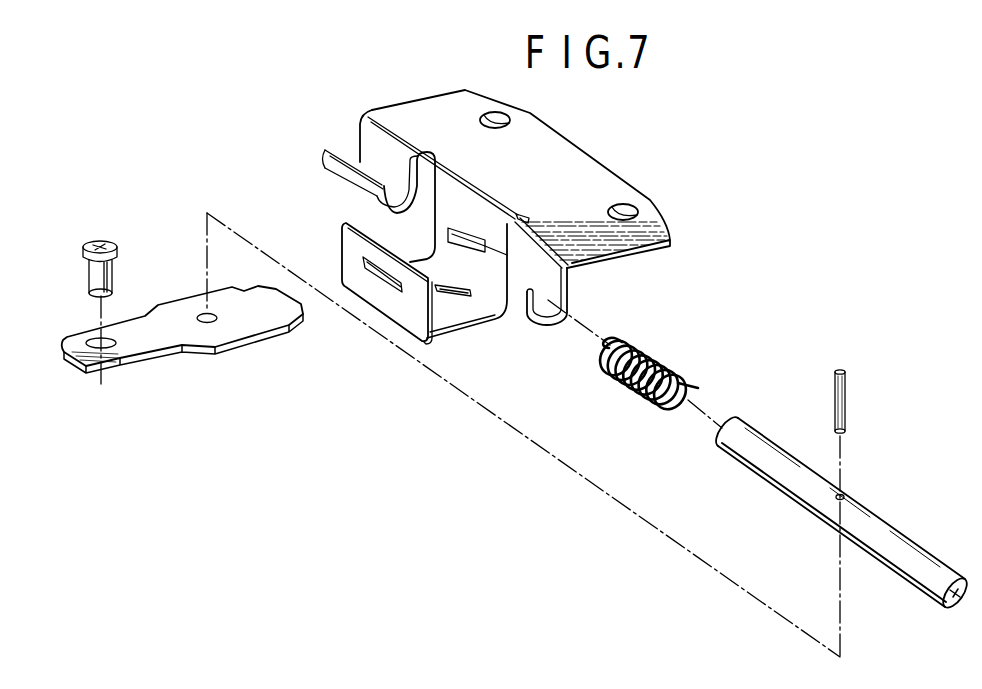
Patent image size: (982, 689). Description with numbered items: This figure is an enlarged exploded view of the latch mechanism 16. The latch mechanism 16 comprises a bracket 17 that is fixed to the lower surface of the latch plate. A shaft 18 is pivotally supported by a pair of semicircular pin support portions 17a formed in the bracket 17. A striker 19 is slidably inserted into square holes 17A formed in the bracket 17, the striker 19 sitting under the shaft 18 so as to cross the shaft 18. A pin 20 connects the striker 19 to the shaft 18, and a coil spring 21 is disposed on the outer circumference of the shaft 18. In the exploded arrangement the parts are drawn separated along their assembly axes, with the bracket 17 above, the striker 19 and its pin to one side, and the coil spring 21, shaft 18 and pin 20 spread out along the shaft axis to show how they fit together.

The latch mechanism 16 is at (748, 160).
The bracket 17 is at (578, 157).
The square holes 17A is at (385, 287).
The semicircular pin support portions 17a is at (538, 322).
The shaft 18 is at (898, 533).
The striker 19 is at (255, 327).
The pin 20 is at (847, 402).
The coil spring 21 is at (657, 354).